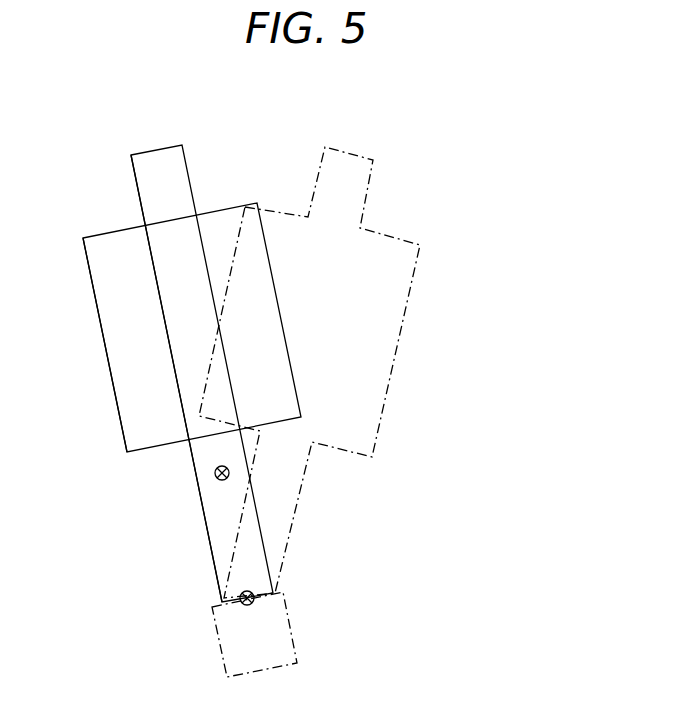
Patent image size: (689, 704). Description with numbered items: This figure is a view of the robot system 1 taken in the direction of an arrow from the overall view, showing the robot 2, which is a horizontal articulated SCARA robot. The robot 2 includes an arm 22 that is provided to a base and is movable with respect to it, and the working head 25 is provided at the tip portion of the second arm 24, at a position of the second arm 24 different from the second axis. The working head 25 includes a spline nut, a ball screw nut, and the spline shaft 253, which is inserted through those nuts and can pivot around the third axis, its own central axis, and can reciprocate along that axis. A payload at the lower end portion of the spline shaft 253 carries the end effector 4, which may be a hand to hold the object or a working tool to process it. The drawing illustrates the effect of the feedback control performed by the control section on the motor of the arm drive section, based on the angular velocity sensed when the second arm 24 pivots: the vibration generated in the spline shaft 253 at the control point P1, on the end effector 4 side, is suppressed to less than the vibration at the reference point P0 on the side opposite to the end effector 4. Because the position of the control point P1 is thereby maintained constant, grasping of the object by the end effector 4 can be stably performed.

The robot system 1 is at (553, 128).
The robot 2 is at (437, 175).
The arm 22 is at (82, 238).
The second arm 24 is at (113, 313).
The working head 25 is at (130, 155).
The spline shaft 253 is at (143, 195).
The end effector 4 is at (223, 657).
The reference point P0 is at (215, 473).
The control point P1 is at (240, 598).